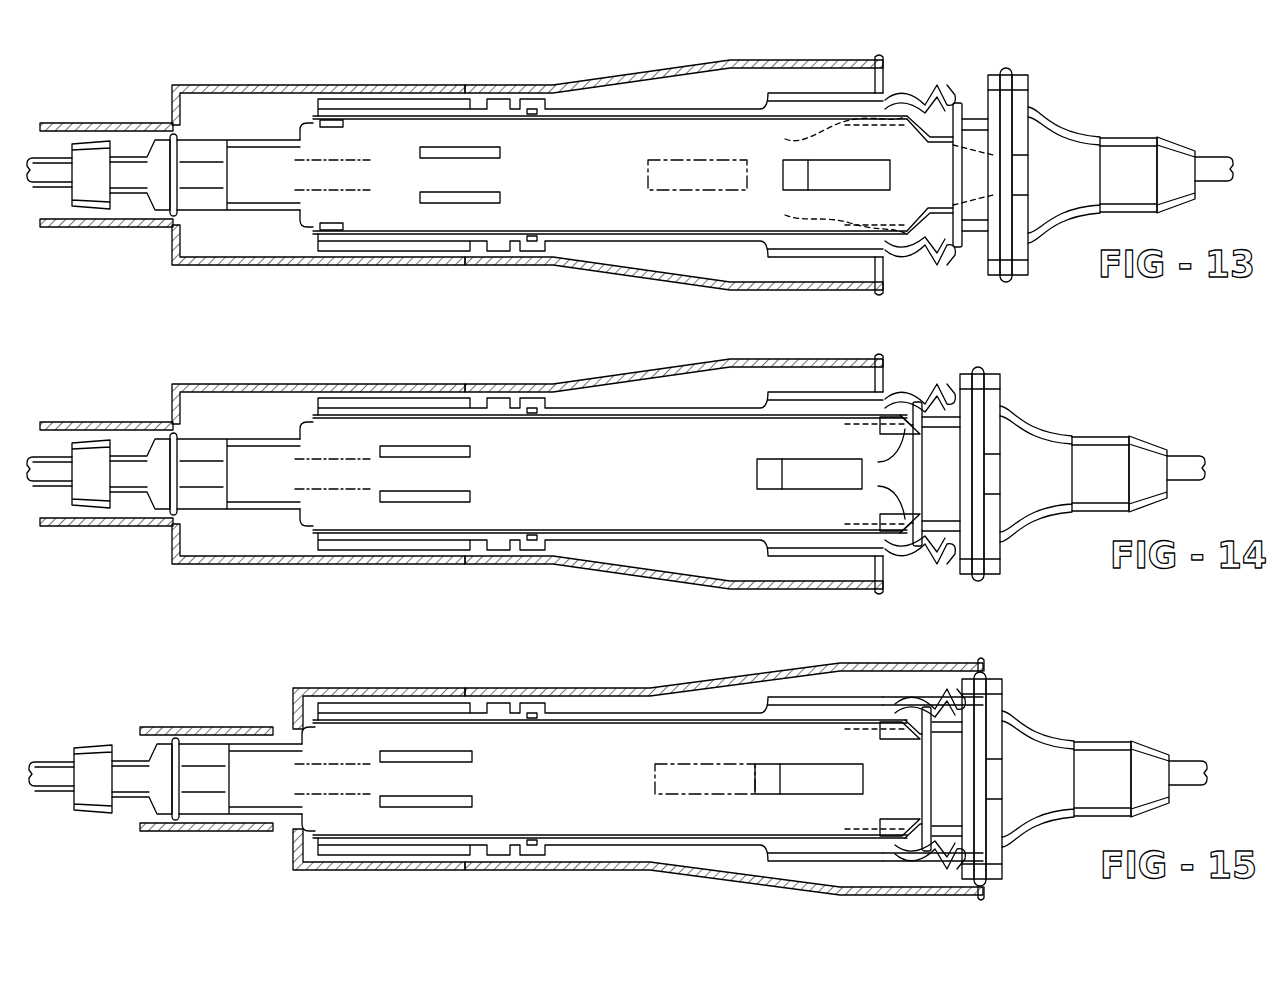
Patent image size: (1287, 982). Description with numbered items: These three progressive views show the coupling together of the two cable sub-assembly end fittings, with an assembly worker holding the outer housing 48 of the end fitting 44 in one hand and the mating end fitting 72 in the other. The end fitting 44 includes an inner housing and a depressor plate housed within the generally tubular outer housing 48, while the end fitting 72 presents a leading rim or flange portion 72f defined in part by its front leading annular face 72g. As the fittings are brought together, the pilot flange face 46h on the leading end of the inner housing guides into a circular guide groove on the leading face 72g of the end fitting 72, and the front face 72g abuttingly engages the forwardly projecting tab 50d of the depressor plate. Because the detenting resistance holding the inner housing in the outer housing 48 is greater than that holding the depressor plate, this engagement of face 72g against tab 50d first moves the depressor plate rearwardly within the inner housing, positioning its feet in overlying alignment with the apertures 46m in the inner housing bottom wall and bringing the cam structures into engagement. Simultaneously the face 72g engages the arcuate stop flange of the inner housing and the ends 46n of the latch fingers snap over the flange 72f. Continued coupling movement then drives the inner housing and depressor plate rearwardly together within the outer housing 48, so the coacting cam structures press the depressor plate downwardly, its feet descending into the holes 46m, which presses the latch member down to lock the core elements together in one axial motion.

In FIG. 13, the end fitting 44 is at (284, 155).
In FIG. 14, the end fitting 44 is at (284, 454).
In FIG. 15, the end fitting 44 is at (335, 760).
In FIG. 13, the outer housing 48 is at (577, 96).
In FIG. 14, the outer housing 48 is at (674, 501).
In FIG. 15, the outer housing 48 is at (724, 756).
In FIG. 13, the apertures in the bottom wall 46m is at (547, 144).
In FIG. 13, the pilot flange face 46h is at (920, 158).
In FIG. 14, the ends of latch fingers 46n is at (925, 438).
In FIG. 13, the end fitting 72 is at (1110, 168).
In FIG. 14, the end fitting 72 is at (1082, 469).
In FIG. 15, the end fitting 72 is at (1084, 774).
In FIG. 14, the leading rim or flange portion 72f is at (1000, 485).
In FIG. 14, the front leading annular face 72g is at (845, 475).
In FIG. 15, the forwardly projecting tab 50d is at (833, 777).